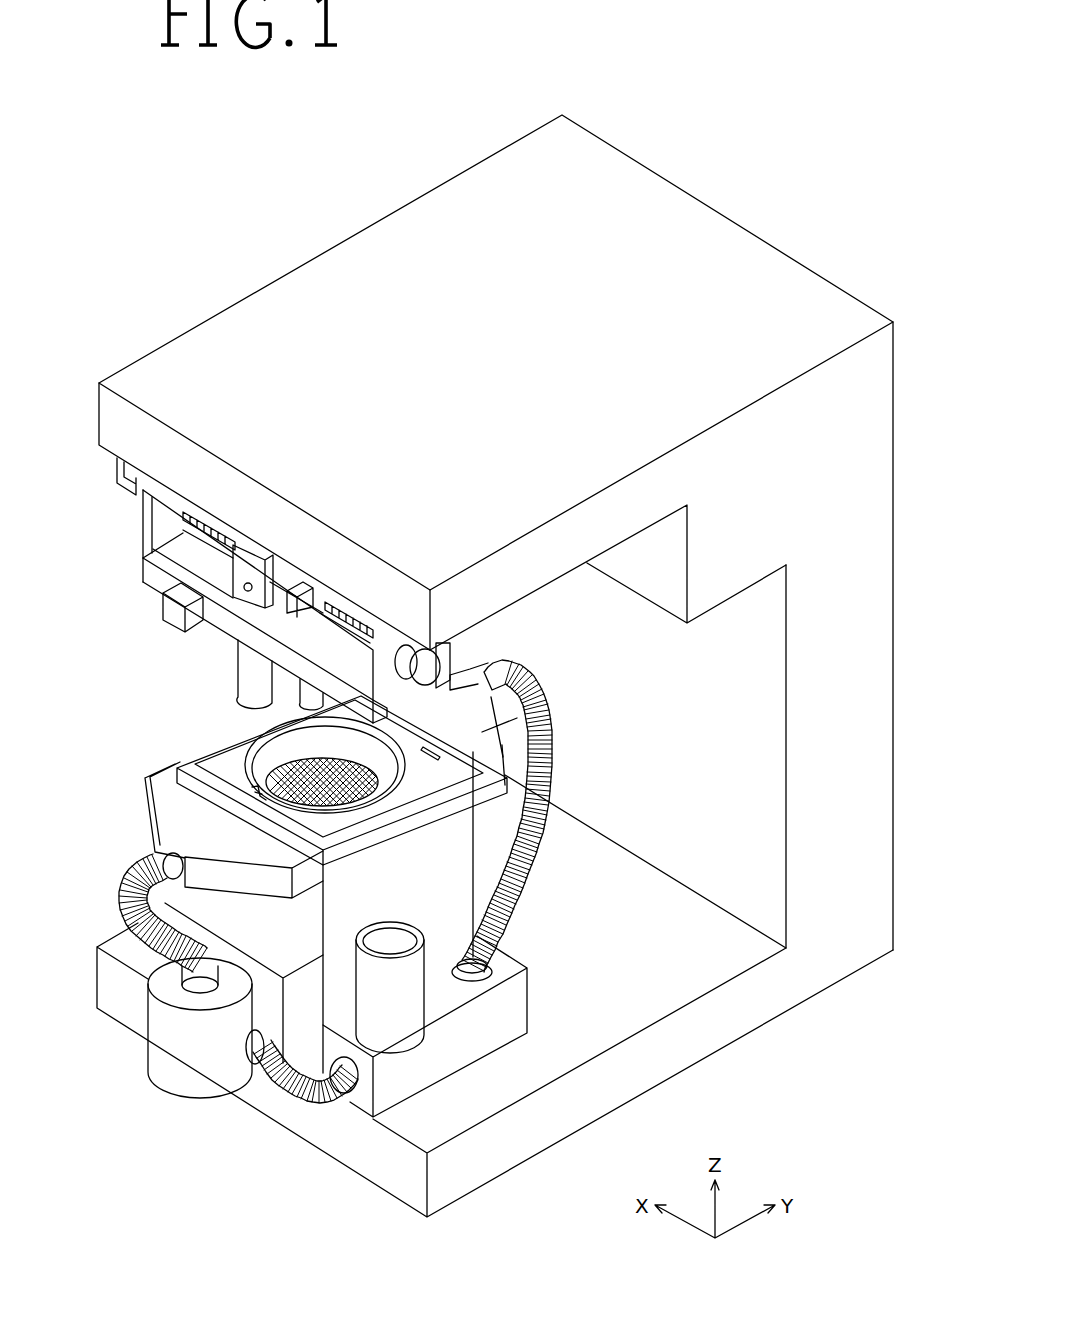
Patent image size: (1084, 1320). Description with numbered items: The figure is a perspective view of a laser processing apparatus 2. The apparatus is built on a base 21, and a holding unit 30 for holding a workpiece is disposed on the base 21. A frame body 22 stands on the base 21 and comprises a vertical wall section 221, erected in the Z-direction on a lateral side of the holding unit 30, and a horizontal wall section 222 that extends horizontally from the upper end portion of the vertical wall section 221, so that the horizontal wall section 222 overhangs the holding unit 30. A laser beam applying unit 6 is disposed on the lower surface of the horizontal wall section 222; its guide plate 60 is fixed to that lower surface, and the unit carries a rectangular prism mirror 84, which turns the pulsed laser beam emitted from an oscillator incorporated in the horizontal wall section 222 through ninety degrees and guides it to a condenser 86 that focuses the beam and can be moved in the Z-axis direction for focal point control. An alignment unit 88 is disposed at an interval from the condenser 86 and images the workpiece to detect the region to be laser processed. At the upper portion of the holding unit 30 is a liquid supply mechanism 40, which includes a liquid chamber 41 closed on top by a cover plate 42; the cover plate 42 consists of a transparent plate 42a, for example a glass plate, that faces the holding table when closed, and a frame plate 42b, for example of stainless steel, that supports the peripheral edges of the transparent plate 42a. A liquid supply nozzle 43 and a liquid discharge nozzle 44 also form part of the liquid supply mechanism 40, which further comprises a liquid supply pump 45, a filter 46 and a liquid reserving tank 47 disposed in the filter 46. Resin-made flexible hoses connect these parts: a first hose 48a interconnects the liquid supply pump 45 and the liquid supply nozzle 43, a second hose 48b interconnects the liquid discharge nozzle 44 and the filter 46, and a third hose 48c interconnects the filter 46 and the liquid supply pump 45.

The laser processing apparatus 2 is at (531, 666).
The base 21 is at (672, 975).
The frame body 22 is at (908, 726).
The vertical wall section 221 is at (532, 382).
The horizontal wall section 222 is at (357, 275).
The laser beam applying unit 6 is at (259, 593).
The guide plate 60 is at (170, 498).
The rectangular prism mirror 84 is at (168, 622).
The condenser 86 is at (247, 683).
The alignment unit 88 is at (307, 718).
The liquid supply mechanism 40 is at (277, 884).
The liquid chamber 41 is at (202, 755).
The cover plate 42 is at (360, 809).
The transparent plate 42a is at (333, 737).
The frame plate 42b is at (327, 823).
The liquid supply nozzle 43 is at (167, 793).
The holding unit 30 is at (339, 911).
The liquid discharge nozzle 44 is at (517, 718).
The liquid supply pump 45 is at (168, 1062).
The filter 46 is at (453, 1047).
The liquid reserving tank 47 is at (412, 990).
The first hose 48a is at (123, 883).
The second hose 48b is at (548, 762).
The third hose 48c is at (267, 1093).